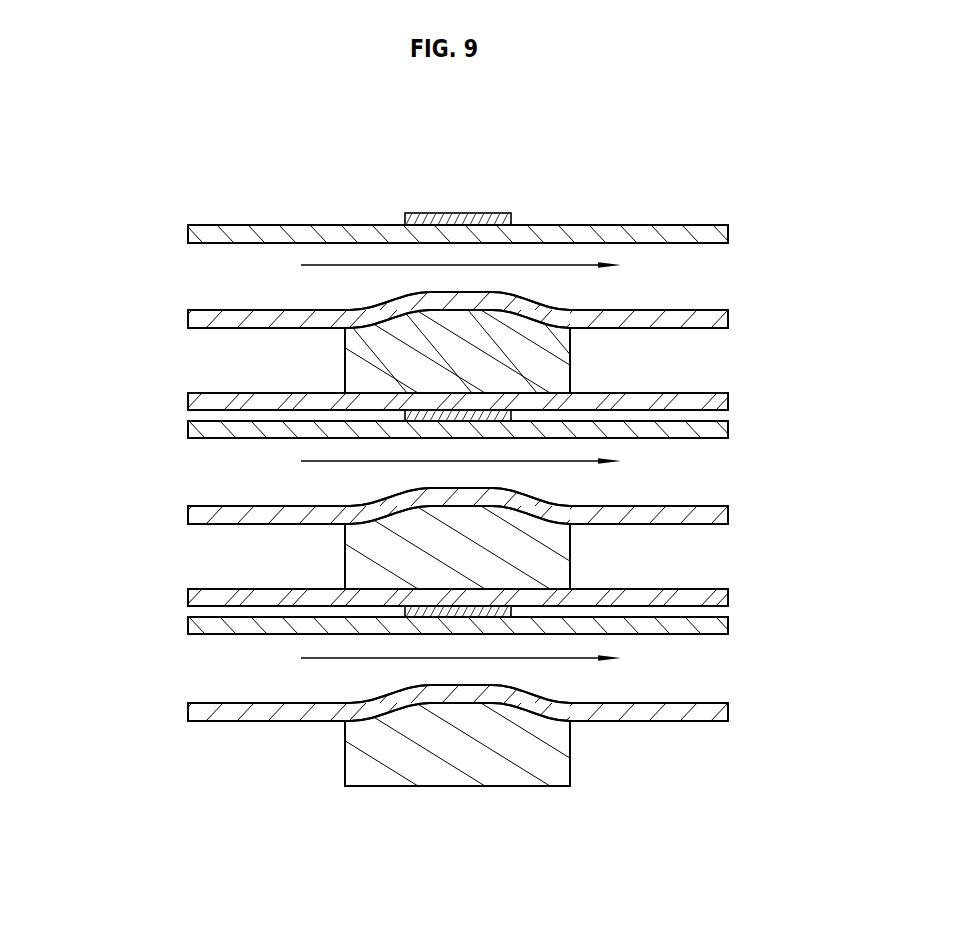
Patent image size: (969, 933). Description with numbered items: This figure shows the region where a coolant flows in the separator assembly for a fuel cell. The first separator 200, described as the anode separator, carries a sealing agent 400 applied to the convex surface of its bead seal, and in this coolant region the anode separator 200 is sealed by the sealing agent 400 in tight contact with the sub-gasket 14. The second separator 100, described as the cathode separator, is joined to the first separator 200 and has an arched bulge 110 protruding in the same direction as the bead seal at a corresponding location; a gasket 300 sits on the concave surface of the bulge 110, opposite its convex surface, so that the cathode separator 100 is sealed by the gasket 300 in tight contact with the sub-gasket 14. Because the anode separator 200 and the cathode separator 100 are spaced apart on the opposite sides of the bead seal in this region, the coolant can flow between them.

The sub-gasket 14 is at (728, 404).
The second separator 100 is at (445, 293).
The bulge 110 is at (400, 303).
The first separator 200 is at (728, 233).
The gasket 300 is at (365, 363).
The sealing agent 400 is at (455, 213).